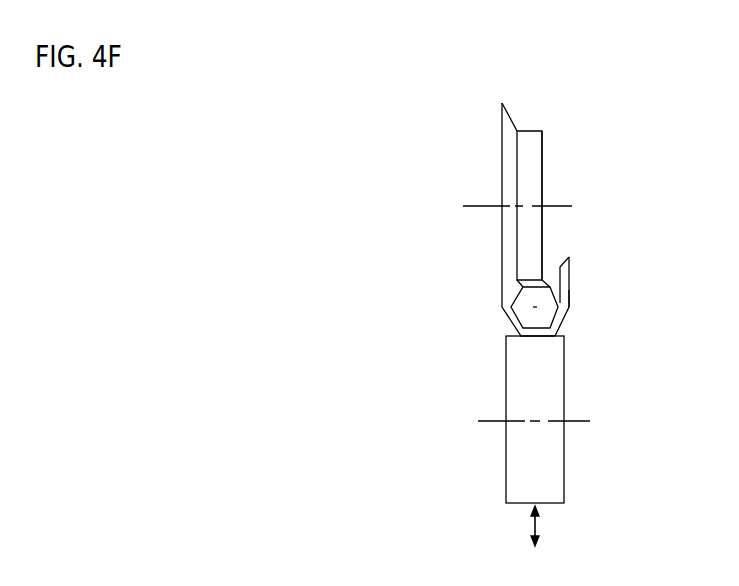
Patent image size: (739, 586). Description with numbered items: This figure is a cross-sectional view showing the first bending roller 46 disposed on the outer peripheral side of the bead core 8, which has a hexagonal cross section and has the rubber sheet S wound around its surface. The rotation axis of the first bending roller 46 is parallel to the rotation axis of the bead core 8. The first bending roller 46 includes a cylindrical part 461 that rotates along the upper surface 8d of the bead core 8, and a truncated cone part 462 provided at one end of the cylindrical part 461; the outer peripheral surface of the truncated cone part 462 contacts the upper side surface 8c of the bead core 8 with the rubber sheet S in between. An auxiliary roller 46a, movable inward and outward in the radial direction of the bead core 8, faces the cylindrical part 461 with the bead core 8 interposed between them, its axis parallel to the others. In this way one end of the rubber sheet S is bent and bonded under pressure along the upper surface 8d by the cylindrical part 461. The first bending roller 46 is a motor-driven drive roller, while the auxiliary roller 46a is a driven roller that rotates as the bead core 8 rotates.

The first bending roller 46 is at (502, 155).
The truncated cone part 462 is at (502, 180).
The cylindrical part 461 is at (542, 180).
The auxiliary roller 46a is at (506, 392).
The bead core 8 is at (557, 293).
The upper side surface 8c is at (511, 301).
The upper surface 8d is at (535, 308).
The rubber sheet S is at (569, 297).